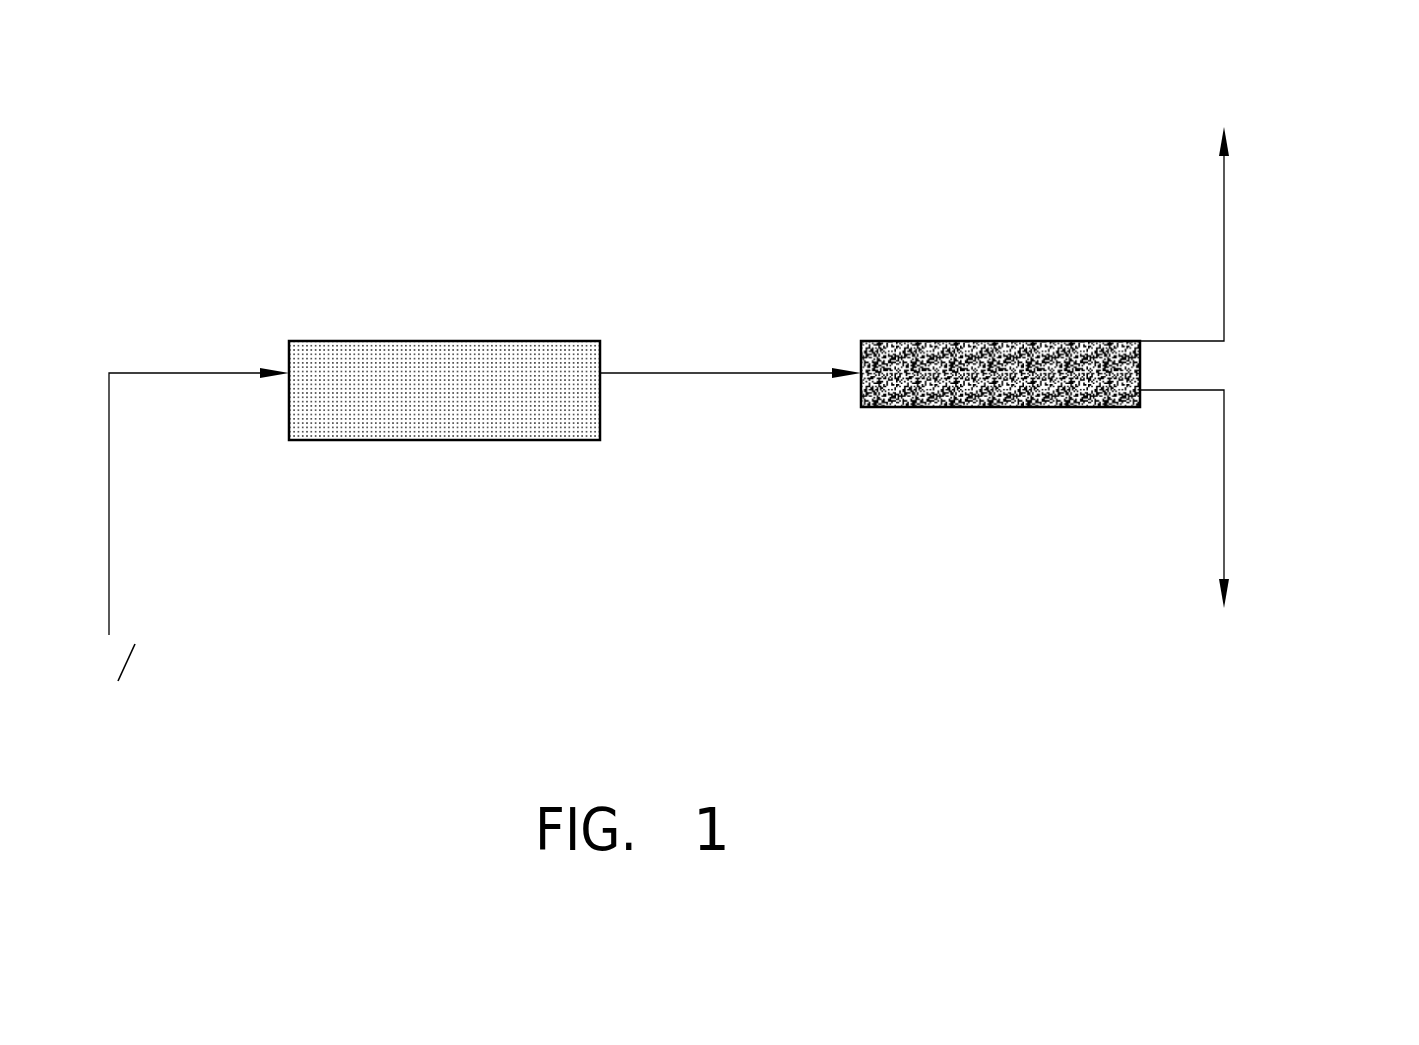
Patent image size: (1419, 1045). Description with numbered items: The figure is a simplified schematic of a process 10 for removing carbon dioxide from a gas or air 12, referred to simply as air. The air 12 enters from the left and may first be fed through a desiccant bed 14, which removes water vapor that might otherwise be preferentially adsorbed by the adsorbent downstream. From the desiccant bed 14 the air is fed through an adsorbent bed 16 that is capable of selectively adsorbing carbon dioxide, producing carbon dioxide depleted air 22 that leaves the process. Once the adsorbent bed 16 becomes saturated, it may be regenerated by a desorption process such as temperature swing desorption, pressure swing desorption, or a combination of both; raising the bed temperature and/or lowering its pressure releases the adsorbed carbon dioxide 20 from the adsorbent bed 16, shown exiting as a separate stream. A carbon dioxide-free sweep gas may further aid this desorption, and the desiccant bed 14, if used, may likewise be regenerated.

The process 10 is at (184, 104).
The gas or air 12 is at (130, 677).
The desiccant bed 14 is at (448, 341).
The adsorbent bed 16 is at (990, 407).
The carbon dioxide 20 is at (1253, 88).
The carbon dioxide depleted air 22 is at (1225, 649).